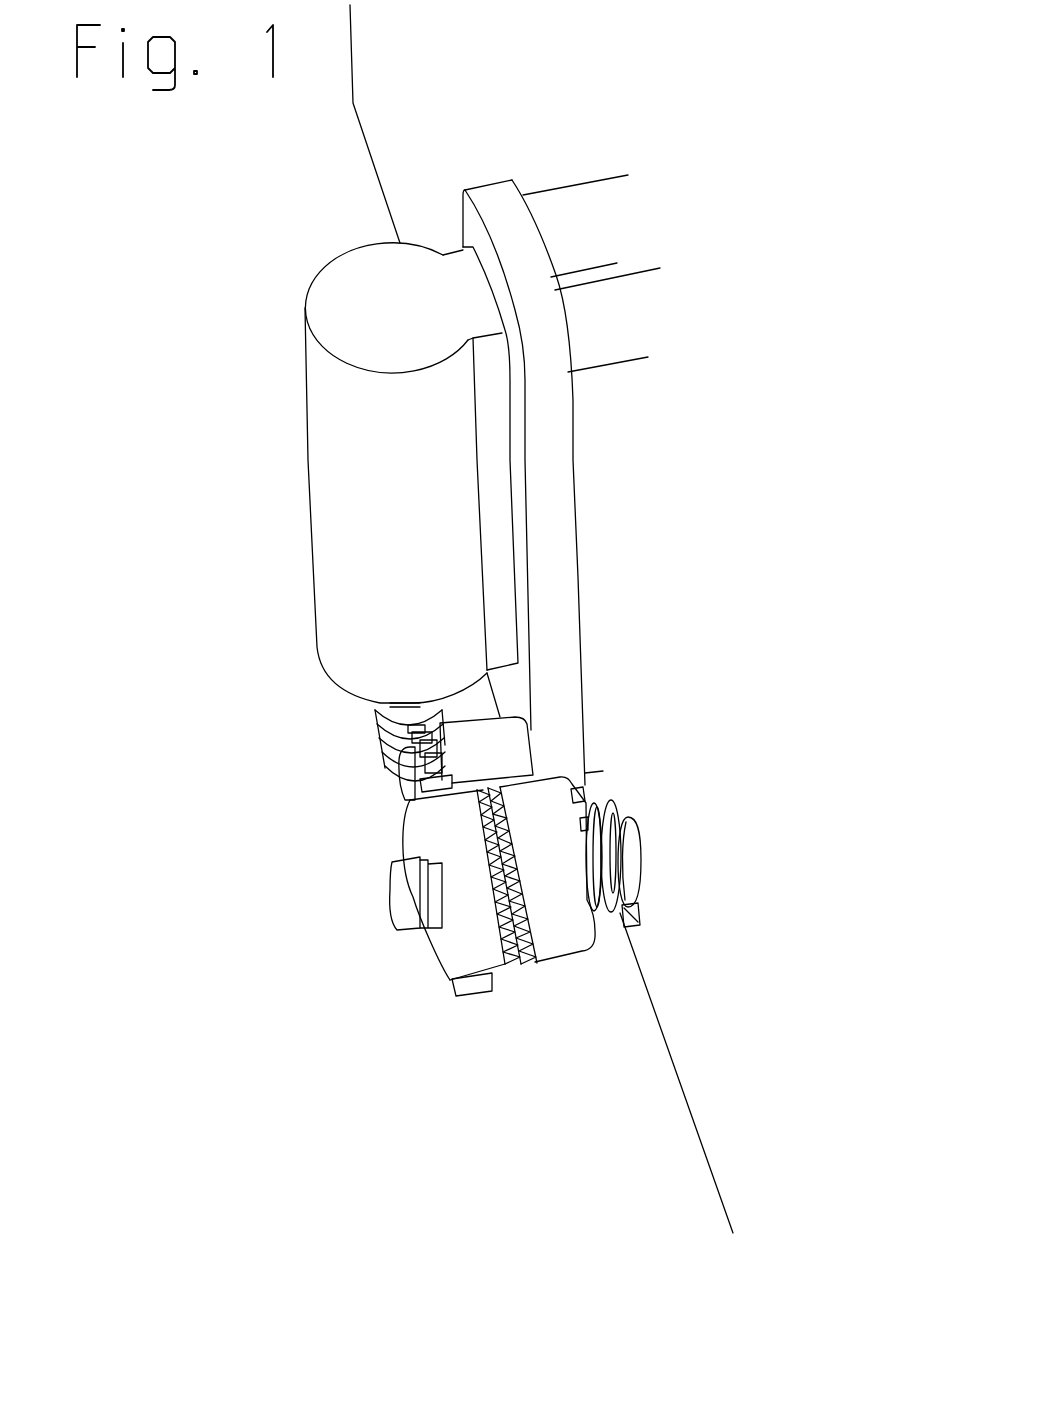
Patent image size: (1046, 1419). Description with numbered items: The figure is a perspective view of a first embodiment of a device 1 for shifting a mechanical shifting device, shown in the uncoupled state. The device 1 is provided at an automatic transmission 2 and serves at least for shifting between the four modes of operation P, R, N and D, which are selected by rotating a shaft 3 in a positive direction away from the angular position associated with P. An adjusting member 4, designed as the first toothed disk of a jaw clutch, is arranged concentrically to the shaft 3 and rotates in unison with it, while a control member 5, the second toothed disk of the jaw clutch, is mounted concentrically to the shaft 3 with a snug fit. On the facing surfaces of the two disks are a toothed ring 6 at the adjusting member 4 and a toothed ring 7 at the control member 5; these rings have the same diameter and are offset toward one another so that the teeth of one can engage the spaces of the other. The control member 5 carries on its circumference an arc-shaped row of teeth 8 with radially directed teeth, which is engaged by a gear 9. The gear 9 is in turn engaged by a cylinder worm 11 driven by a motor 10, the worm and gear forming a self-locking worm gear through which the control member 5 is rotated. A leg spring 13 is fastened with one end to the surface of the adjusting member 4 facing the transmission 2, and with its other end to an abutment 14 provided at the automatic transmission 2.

The device for shifting a mechanical shifting device 1 is at (461, 619).
The automatic transmission 2 is at (580, 619).
The shaft 3 is at (713, 866).
The adjusting member 4 is at (604, 998).
The control member 5 is at (400, 948).
The toothed ring 6 is at (547, 987).
The toothed ring 7 is at (507, 990).
The row of teeth 8 is at (442, 1072).
The gear 9 is at (375, 818).
The motor 10 is at (325, 473).
The cylinder worm 11 is at (316, 780).
The leg spring 13 is at (644, 999).
The abutment 14 is at (714, 1006).